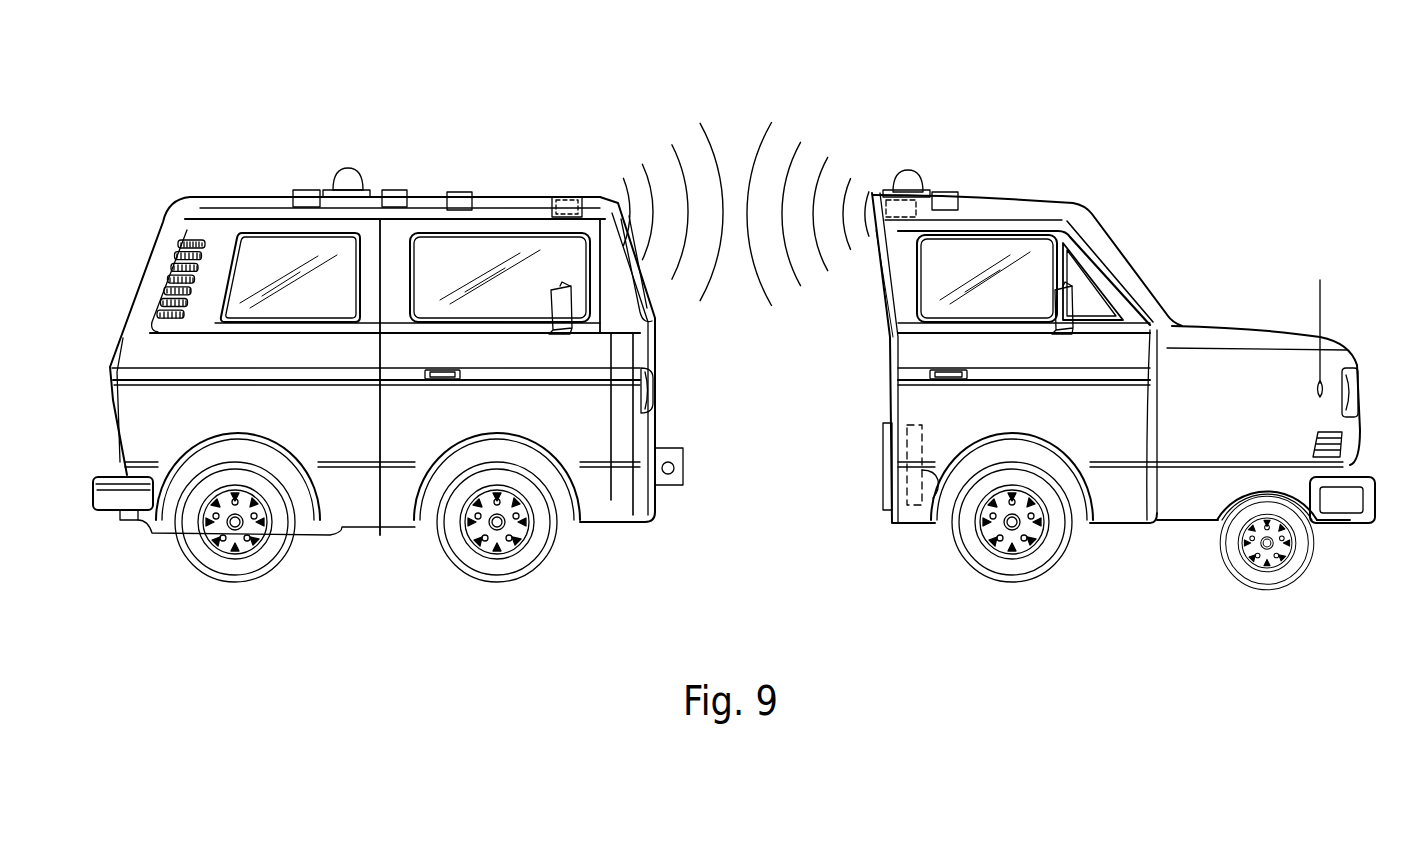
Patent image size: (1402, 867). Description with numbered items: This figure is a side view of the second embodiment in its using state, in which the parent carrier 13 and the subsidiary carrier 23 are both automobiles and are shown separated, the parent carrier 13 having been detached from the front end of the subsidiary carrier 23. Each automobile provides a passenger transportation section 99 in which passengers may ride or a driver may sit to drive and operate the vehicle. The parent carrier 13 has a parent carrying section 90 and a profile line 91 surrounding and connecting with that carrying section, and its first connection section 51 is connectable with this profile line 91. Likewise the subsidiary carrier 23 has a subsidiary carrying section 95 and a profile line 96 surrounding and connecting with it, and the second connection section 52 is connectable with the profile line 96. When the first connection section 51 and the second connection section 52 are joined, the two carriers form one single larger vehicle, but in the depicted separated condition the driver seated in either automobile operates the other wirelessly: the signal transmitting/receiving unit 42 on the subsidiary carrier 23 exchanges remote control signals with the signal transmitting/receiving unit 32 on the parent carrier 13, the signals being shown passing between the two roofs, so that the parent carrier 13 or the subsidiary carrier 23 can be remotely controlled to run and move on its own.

The parent carrier 13 is at (1223, 317).
The subsidiary carrier 23 is at (237, 193).
The signal transmitting/receiving unit 32 is at (886, 194).
The signal transmitting/receiving unit 42 is at (563, 196).
The first connection section 51 is at (940, 500).
The second connection section 52 is at (669, 487).
The parent carrying section 90 is at (1115, 479).
The profile line 91 is at (880, 332).
The subsidiary carrying section 95 is at (394, 484).
The profile line 96 is at (660, 342).
The passenger transportation section 99 is at (535, 236).